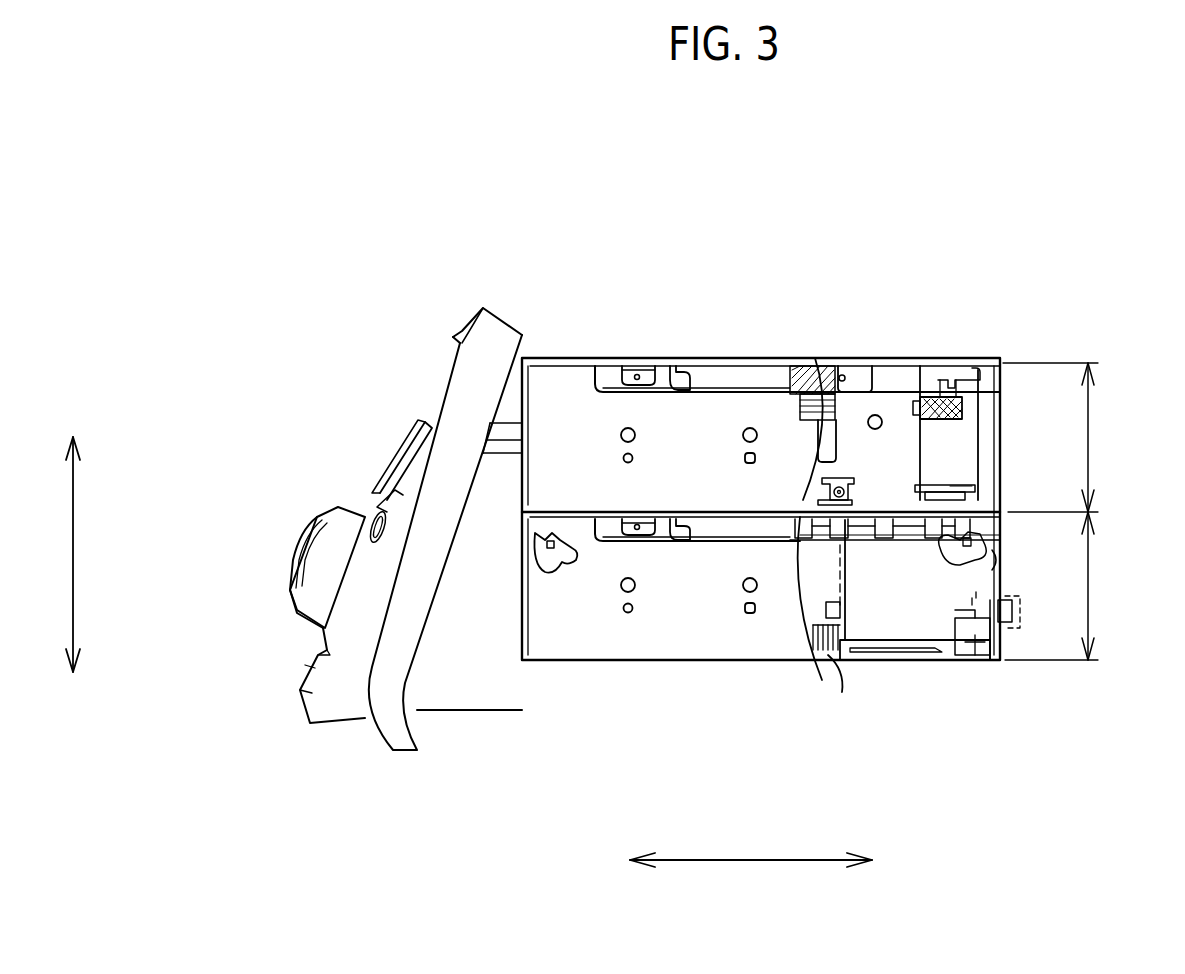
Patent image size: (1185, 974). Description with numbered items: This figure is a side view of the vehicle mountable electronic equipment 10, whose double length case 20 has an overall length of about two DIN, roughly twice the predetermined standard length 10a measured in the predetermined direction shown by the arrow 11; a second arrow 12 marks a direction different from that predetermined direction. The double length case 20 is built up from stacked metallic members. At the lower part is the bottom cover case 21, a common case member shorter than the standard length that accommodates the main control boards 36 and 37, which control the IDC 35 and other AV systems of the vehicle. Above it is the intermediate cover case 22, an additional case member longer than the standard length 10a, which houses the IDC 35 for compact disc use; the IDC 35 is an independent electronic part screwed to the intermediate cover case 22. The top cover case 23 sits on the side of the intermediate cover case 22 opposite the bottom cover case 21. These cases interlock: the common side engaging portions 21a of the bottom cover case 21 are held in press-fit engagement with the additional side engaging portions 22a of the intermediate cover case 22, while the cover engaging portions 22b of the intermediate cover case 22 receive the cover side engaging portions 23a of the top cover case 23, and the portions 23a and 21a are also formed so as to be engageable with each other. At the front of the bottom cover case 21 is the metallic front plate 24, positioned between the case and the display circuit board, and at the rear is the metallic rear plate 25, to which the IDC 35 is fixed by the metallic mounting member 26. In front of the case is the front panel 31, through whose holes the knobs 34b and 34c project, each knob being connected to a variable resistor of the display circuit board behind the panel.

The vehicle mountable electronic equipment 10 is at (857, 168).
The predetermined standard length 10a is at (1090, 437).
The arrow indicating predetermined direction 11 is at (78, 482).
The arrow indicating a direction 12 is at (750, 862).
The double length case 20 is at (899, 304).
The bottom cover case 21 is at (667, 640).
The engaging portions of bottom cover case 21a is at (727, 532).
The intermediate cover case 22 is at (567, 356).
The engaging portions of intermediate cover case 22a is at (598, 525).
The cover engaging portions 22b is at (683, 384).
The top cover case 23 is at (620, 364).
The engaging portions of top cover case 23a is at (769, 375).
The front plate 24 is at (467, 697).
The rear plate 25 is at (1003, 590).
The mounting member 26 is at (990, 417).
The front panel 31 is at (462, 333).
The knob 34b is at (307, 535).
The knob 34c is at (350, 523).
The IDC (In-Dash Changer) 35 is at (982, 463).
The main control board 36 is at (930, 660).
The main control board 37 is at (985, 522).